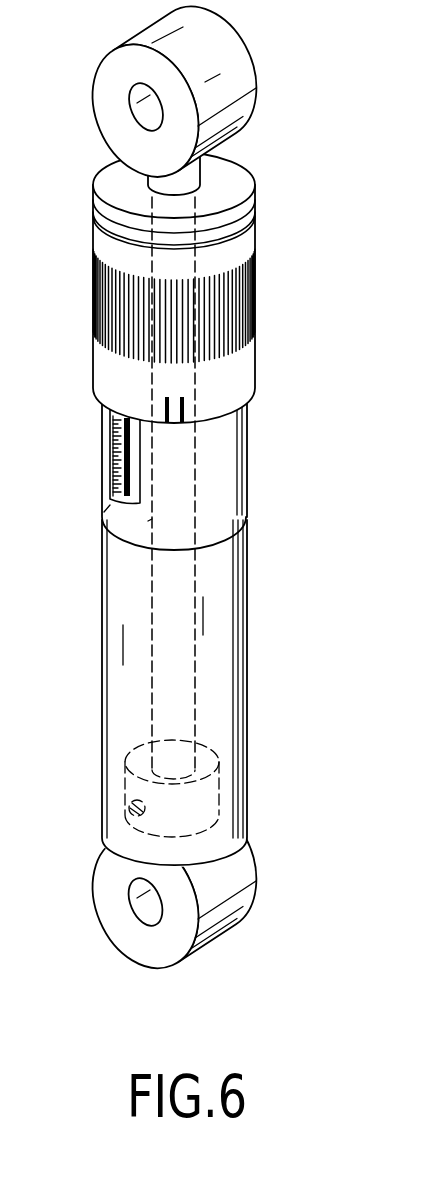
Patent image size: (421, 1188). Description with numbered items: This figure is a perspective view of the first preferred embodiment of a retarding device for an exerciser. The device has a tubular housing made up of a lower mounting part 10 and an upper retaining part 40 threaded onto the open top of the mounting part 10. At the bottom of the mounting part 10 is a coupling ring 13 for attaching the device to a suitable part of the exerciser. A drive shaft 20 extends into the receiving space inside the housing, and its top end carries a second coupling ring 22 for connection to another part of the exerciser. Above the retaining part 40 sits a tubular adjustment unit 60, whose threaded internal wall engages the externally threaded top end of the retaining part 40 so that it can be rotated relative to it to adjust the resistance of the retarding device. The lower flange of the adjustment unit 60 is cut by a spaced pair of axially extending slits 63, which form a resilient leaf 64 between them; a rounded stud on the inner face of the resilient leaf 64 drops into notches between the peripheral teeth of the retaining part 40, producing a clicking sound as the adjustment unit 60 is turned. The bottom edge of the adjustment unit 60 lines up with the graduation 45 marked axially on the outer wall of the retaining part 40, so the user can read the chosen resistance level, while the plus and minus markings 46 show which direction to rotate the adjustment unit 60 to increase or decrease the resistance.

The mounting part 10 is at (248, 592).
The coupling ring 13 is at (237, 877).
The drive shaft 20 is at (197, 696).
The coupling ring 22 is at (240, 87).
The retaining part 40 is at (247, 446).
The graduation 45 is at (114, 440).
The "+" and "−" markings 46 is at (148, 521).
The tubular adjustment unit 60 is at (320, 280).
The slits 63 is at (168, 398).
The resilient leaf 64 is at (184, 412).